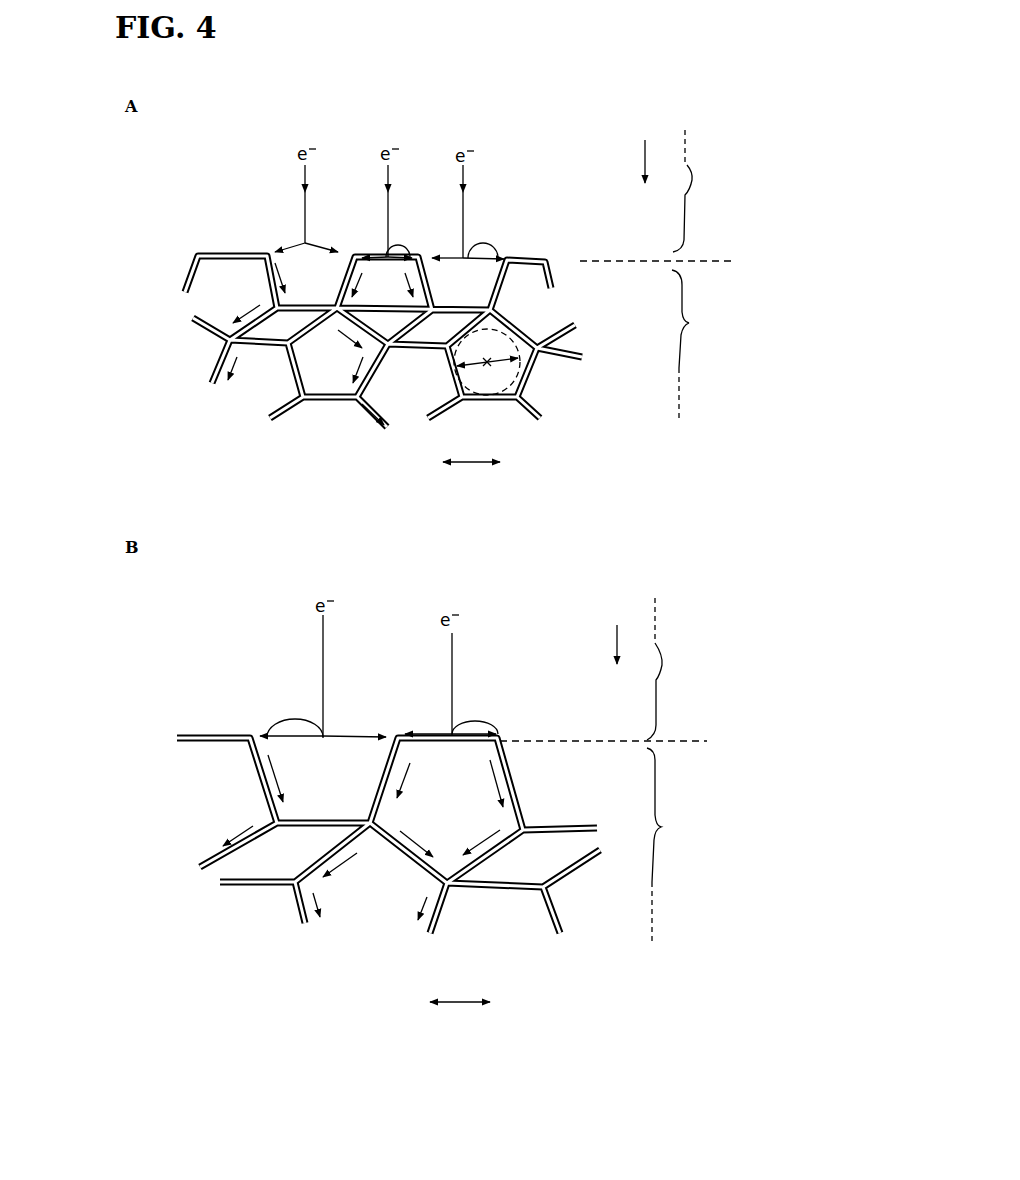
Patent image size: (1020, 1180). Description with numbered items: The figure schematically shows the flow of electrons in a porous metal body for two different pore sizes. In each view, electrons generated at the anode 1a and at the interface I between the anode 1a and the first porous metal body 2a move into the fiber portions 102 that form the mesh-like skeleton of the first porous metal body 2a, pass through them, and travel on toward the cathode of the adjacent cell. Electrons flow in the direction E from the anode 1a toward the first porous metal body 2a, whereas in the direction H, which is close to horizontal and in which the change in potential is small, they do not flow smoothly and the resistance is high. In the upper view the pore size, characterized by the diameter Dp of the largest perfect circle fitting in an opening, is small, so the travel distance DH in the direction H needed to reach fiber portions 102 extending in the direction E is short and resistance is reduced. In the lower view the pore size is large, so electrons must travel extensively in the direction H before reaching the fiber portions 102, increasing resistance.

In FIG. 4A, the fiber portions 102 is at (262, 283).
In FIG. 4B, the fiber portions 102 is at (517, 777).
In FIG. 4A, the anode 1a is at (688, 222).
In FIG. 4B, the anode 1a is at (668, 669).
In FIG. 4A, the first porous metal body 2a is at (696, 346).
In FIG. 4B, the first porous metal body 2a is at (668, 845).
In FIG. 4A, the interface I is at (710, 262).
In FIG. 4B, the interface I is at (684, 743).
In FIG. 4A, the travel distance DH is at (476, 246).
In FIG. 4B, the travel distance DH is at (474, 722).
In FIG. 4A, the diameter of largest perfect circle Dp is at (497, 364).
In FIG. 4A, the direction E is at (643, 151).
In FIG. 4B, the direction E is at (614, 634).
In FIG. 4A, the direction H is at (483, 463).
In FIG. 4B, the direction H is at (469, 1003).